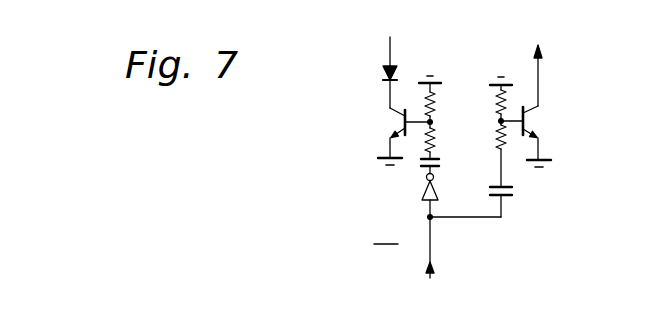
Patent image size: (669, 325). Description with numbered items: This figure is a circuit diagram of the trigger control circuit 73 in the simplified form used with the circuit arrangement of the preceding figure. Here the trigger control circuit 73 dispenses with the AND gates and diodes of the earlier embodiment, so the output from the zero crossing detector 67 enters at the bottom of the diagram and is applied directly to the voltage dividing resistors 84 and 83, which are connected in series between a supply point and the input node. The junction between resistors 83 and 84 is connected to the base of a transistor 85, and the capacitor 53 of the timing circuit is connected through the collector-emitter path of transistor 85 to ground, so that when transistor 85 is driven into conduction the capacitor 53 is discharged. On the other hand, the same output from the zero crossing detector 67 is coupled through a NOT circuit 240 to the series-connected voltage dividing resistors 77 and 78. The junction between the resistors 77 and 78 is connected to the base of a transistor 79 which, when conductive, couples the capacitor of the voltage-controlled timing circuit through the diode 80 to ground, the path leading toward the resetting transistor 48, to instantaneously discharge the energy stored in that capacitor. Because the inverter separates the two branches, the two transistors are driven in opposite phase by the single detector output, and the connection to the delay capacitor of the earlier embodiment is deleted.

The reset transistor 48 connection 48 is at (365, 39).
The diode 80 is at (384, 70).
The transistor 79 is at (402, 116).
The resistor 77 is at (437, 104).
The resistor 78 is at (437, 142).
The NOT circuit 240 is at (421, 192).
The zero crossing detector 67 is at (429, 259).
The trigger control circuit 73 is at (387, 233).
The resistor 83 is at (496, 105).
The resistor 84 is at (494, 136).
The transistor 85 is at (540, 124).
The capacitor 53 is at (573, 65).